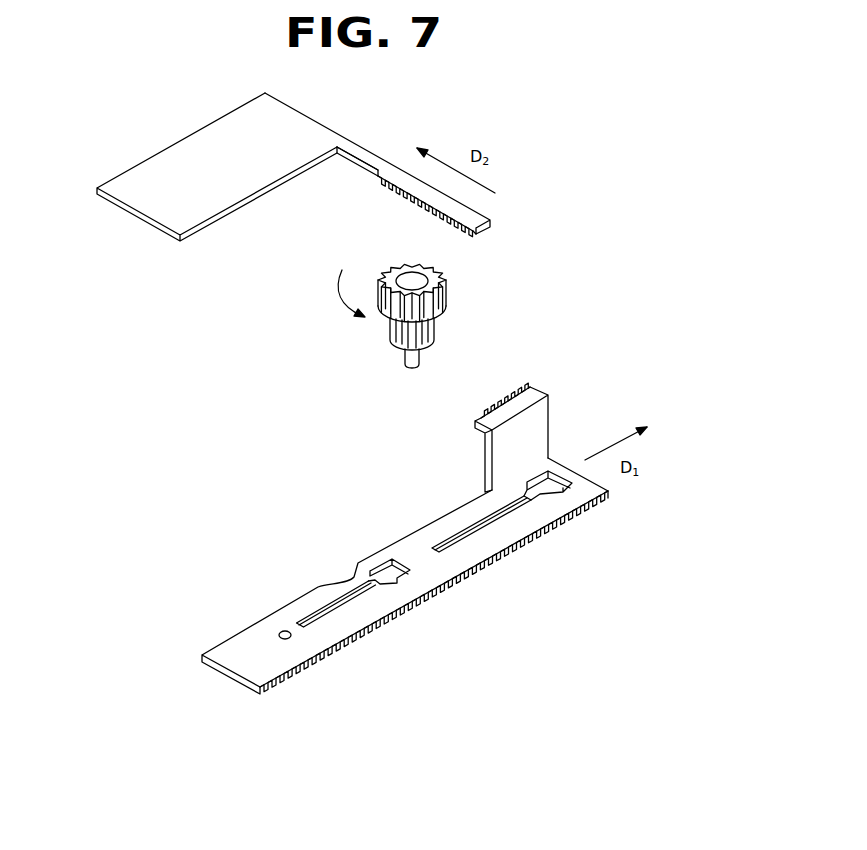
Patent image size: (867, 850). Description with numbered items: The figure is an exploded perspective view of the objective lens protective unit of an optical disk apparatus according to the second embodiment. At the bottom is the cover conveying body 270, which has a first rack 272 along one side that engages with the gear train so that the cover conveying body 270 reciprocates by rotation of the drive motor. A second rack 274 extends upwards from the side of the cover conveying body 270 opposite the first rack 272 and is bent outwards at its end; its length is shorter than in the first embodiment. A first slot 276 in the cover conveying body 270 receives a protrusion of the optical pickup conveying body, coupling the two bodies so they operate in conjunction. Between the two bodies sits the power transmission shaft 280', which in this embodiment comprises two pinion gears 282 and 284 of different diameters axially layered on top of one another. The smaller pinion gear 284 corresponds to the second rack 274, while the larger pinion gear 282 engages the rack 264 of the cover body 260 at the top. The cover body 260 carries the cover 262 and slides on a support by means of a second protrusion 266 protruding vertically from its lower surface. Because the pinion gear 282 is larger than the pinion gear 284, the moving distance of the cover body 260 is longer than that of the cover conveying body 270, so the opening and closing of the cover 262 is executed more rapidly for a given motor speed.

The cover body 260 is at (337, 168).
The cover 262 is at (164, 175).
The rack of the cover body 264 is at (467, 237).
The second protrusion 266 is at (376, 178).
The cover conveying body 270 is at (402, 587).
The first rack 272 is at (283, 690).
The second rack 274 is at (479, 410).
The first slot 276 is at (552, 490).
The power transmission shaft 280' is at (505, 316).
The pinion gear 282 is at (436, 303).
The pinion gear 284 is at (430, 347).